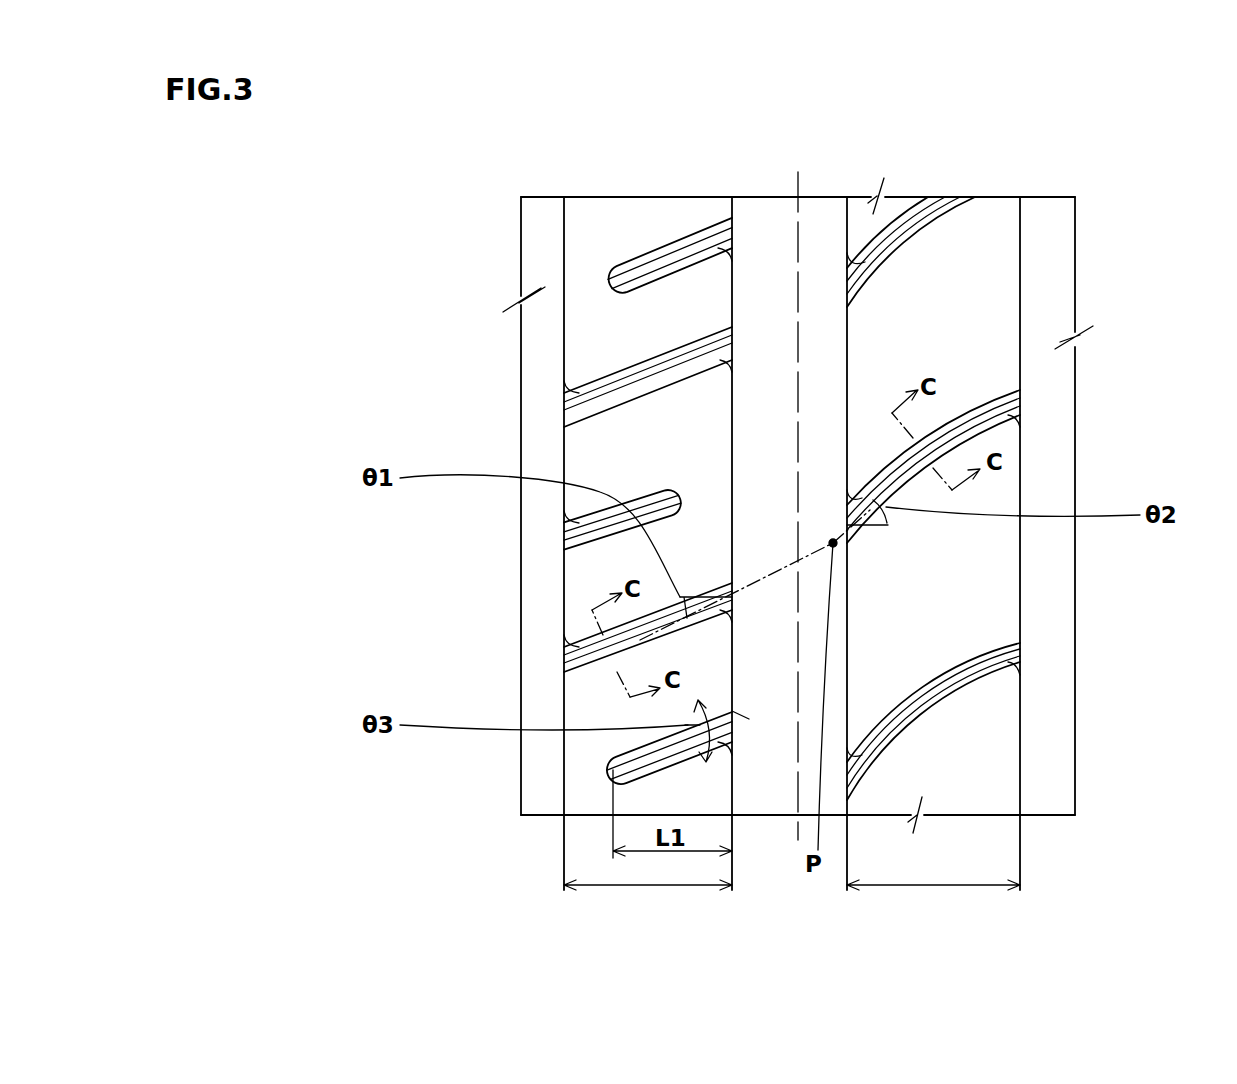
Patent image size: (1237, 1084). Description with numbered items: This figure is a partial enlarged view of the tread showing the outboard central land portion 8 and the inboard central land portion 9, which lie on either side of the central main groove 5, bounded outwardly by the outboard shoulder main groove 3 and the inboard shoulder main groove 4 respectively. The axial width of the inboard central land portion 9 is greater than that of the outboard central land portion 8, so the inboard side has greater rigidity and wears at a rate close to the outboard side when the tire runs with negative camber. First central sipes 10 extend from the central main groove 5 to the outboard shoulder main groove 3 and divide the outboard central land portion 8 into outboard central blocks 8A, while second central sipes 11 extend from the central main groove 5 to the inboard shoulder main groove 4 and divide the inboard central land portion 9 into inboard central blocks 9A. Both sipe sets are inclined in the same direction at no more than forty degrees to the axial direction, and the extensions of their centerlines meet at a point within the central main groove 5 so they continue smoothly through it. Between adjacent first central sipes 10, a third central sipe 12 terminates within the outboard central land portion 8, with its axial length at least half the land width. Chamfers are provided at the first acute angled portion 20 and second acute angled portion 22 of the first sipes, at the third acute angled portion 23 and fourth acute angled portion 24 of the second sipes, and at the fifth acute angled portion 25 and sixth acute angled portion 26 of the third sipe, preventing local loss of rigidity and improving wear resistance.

The outboard shoulder main groove 3 is at (543, 215).
The inboard shoulder main groove 4 is at (1047, 238).
The central main groove 5 is at (822, 218).
The outboard central land portion 8 is at (621, 184).
The outboard central block 8A is at (600, 320).
The inboard central land portion 9 is at (921, 185).
The inboard central block 9A is at (977, 248).
The first central sipe 10 is at (590, 415).
The second central sipe 11 is at (988, 424).
The third central sipe 12 is at (655, 262).
The first acute angled portion 20 is at (748, 353).
The second acute angled portion 22 is at (554, 398).
The third acute angled portion 23 is at (841, 512).
The fourth acute angled portion 24 is at (1033, 415).
The fifth acute angled portion 25 is at (744, 253).
The sixth acute angled portion 26 is at (554, 532).